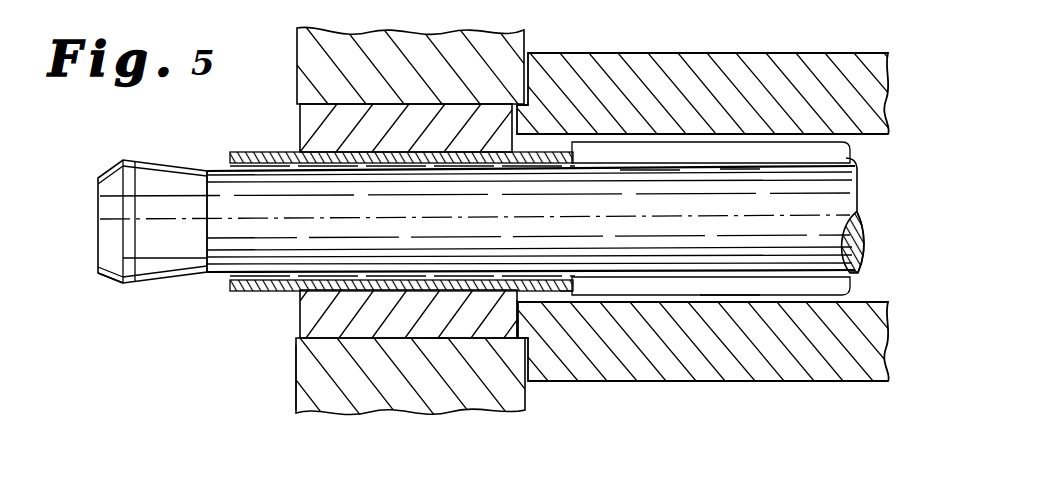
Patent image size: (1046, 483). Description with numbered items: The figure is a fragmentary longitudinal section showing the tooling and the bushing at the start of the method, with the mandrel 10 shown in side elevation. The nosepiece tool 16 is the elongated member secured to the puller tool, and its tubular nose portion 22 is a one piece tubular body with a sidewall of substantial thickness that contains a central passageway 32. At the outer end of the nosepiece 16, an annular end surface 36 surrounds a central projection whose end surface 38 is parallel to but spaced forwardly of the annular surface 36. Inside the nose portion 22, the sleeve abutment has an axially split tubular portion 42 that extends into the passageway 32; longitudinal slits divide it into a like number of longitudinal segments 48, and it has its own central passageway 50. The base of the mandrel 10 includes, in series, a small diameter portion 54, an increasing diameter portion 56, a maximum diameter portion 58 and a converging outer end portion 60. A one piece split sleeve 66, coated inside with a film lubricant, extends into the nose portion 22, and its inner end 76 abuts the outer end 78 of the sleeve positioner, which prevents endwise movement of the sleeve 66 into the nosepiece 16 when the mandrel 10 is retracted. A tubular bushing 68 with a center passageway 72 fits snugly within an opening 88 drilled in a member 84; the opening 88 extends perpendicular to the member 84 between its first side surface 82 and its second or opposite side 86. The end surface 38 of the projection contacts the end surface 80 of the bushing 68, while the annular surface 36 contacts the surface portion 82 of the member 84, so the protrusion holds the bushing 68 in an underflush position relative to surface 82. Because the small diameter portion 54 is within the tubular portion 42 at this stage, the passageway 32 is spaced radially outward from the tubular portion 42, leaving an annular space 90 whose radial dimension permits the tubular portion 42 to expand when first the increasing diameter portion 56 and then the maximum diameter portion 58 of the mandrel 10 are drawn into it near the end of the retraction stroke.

The mandrel 10 is at (206, 286).
The nosepiece tool 16 is at (608, 398).
The tubular nose portion 22 is at (757, 381).
The central passageway 32 is at (867, 300).
The annular end surface 36 is at (518, 362).
The end surface of projection 38 is at (512, 320).
The axially split tubular portion 42 is at (805, 155).
The longitudinal segments 48 is at (683, 153).
The central passageway 50 is at (729, 168).
The small diameter portion 54 is at (652, 176).
The increasing diameter portion 56 is at (190, 172).
The maximum diameter portion 58 is at (128, 160).
The converging outer end portion 60 is at (112, 283).
The split sleeve 66 is at (262, 294).
The tubular bushing 68 is at (390, 325).
The center passageway of bushing 72 is at (346, 173).
The inner end of split sleeve 76 is at (581, 290).
The outer end of sleeve positioner 78 is at (556, 163).
The end surface of bushing 80 is at (528, 128).
The surface portion of first side 82 is at (538, 88).
The member 84 is at (338, 413).
The second side 86 is at (296, 384).
The opening 88 is at (446, 333).
The annular space 90 is at (712, 298).